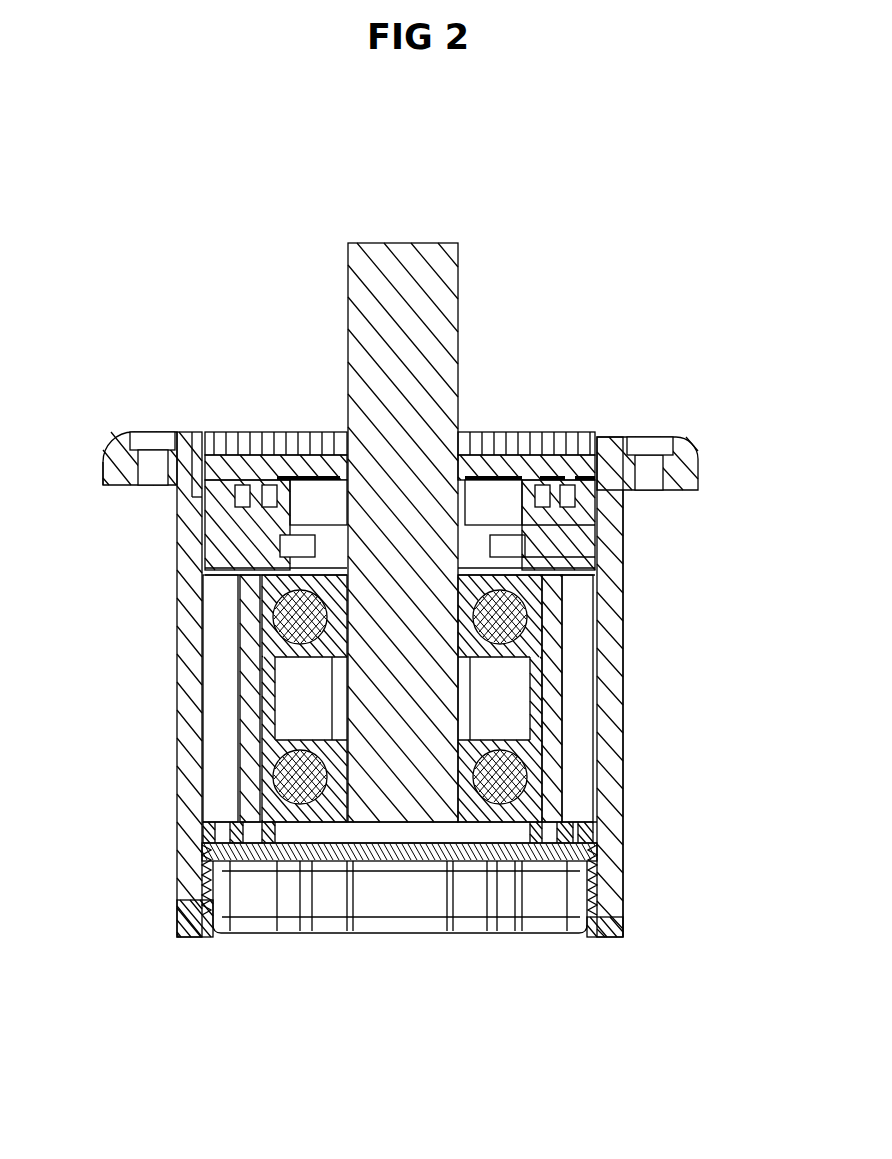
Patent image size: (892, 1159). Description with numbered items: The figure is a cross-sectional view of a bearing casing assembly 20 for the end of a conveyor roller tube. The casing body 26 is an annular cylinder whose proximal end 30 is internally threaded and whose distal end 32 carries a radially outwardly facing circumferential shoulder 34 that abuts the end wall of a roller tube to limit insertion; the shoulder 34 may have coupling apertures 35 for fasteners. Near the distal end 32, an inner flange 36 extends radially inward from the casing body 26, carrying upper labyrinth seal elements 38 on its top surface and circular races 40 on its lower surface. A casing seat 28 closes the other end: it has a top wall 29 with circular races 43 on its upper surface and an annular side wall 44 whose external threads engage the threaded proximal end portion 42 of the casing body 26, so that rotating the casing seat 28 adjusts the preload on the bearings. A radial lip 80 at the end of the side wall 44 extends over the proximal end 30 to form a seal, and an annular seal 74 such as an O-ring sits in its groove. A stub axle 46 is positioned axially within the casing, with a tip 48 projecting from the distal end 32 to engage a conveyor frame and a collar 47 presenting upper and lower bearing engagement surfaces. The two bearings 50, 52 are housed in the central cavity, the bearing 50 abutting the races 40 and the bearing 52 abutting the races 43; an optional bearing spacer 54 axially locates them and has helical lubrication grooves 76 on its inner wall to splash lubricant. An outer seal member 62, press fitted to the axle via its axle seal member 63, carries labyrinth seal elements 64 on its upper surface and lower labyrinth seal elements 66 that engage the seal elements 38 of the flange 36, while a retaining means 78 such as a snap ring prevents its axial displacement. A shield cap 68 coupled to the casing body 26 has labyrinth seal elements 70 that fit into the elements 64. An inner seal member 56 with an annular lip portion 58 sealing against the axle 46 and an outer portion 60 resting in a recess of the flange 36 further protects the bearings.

The bearing casing assembly 20 is at (708, 287).
The casing body 26 is at (610, 587).
The casing seat 28 is at (252, 898).
The top wall 29 is at (405, 870).
The proximal end 30 is at (620, 898).
The distal end 32 is at (622, 450).
The circumferential shoulder 34 is at (103, 473).
The coupling apertures 35 is at (152, 445).
The inner flange 36 is at (570, 523).
The upper labyrinth seal elements 38 is at (597, 507).
The circular races 40 is at (567, 553).
The threaded proximal end portion 42 is at (607, 885).
The circular races 43 is at (240, 826).
The annular side wall 44 is at (187, 877).
The stub axle 46 is at (432, 702).
The collar 47 is at (330, 740).
The tip 48 is at (390, 281).
The bearing 50 is at (278, 642).
The bearing 52 is at (278, 752).
The bearing spacer 54 is at (218, 642).
The inner seal member 56 is at (300, 566).
The annular lip portion 58 is at (292, 556).
The outer portion 60 is at (285, 540).
The outer seal member 62 is at (325, 470).
The axle seal member 63 is at (467, 493).
The labyrinth seal elements 64 is at (548, 460).
The lower labyrinth seal elements 66 is at (568, 495).
The shield cap 68 is at (302, 440).
The labyrinth seal elements 70 is at (243, 447).
The annular seal 74 is at (188, 452).
The helical lubrication grooves 76 is at (257, 733).
The retaining means 78 is at (347, 520).
The radial lip 80 is at (173, 915).